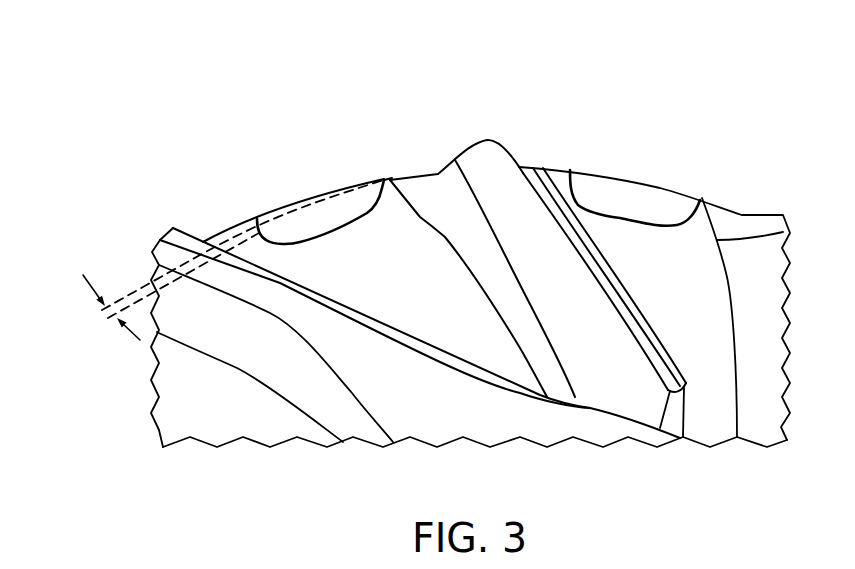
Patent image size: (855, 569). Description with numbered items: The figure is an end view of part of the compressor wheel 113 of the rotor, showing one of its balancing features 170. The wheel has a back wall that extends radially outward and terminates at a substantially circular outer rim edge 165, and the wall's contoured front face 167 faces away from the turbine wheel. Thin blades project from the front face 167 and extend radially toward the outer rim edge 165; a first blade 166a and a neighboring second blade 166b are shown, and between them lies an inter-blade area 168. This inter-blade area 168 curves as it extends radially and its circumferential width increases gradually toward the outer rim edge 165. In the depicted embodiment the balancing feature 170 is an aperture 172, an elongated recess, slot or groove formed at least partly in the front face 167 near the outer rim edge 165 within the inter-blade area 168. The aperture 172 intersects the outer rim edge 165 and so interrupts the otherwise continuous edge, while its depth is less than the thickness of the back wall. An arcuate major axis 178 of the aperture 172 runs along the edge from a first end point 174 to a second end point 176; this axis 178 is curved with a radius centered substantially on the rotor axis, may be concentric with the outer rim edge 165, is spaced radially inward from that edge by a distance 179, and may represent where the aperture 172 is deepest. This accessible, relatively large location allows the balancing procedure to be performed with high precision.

The compressor wheel 113 is at (431, 228).
The outer rim edge 165 is at (230, 232).
The first blade 166a is at (495, 168).
The second blade 166b is at (168, 251).
The front face 167 is at (460, 318).
The inter-blade area 168 is at (468, 241).
The balancing feature 170 is at (325, 152).
The balancing aperture 172 is at (300, 197).
The first end point 174 is at (240, 228).
The second end point 176 is at (386, 185).
The arcuate major axis 178 is at (283, 208).
The distance 179 is at (82, 293).